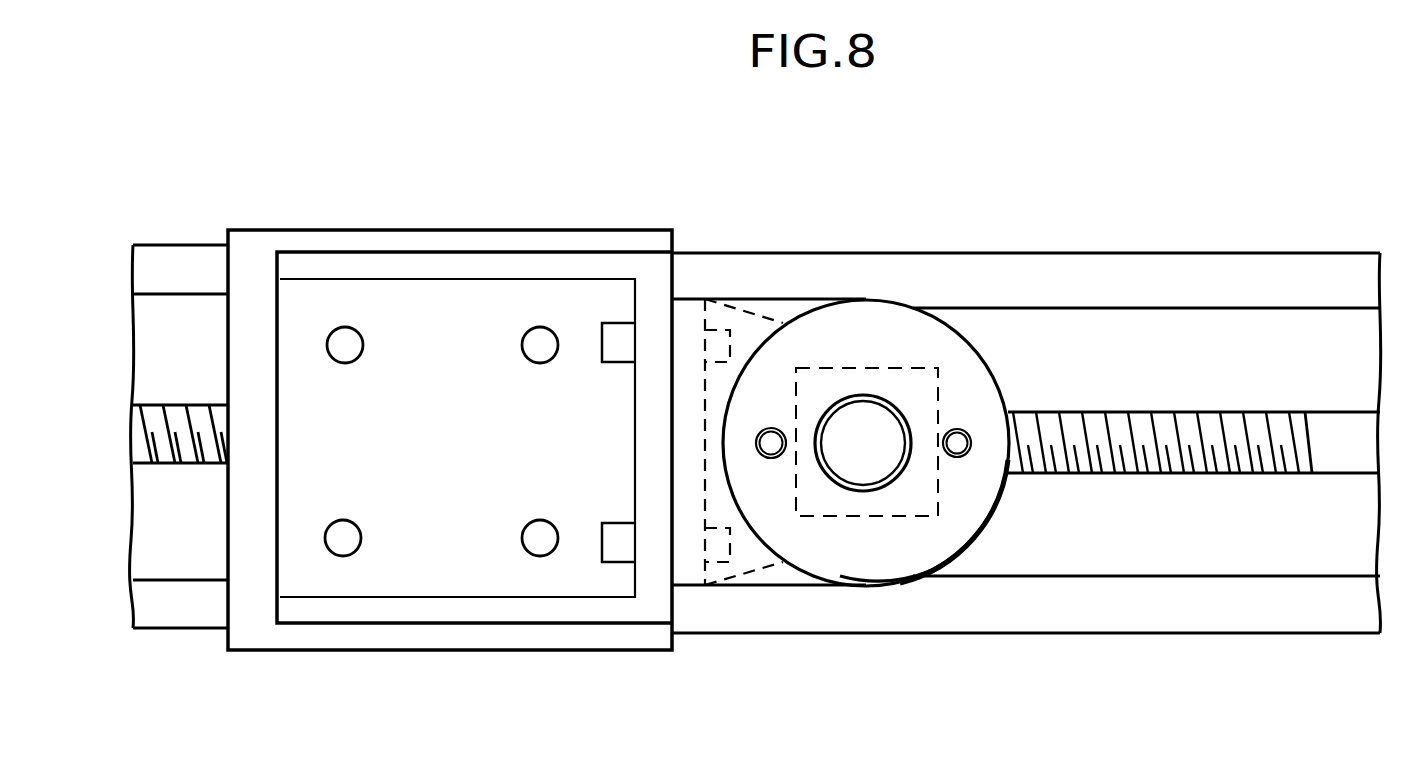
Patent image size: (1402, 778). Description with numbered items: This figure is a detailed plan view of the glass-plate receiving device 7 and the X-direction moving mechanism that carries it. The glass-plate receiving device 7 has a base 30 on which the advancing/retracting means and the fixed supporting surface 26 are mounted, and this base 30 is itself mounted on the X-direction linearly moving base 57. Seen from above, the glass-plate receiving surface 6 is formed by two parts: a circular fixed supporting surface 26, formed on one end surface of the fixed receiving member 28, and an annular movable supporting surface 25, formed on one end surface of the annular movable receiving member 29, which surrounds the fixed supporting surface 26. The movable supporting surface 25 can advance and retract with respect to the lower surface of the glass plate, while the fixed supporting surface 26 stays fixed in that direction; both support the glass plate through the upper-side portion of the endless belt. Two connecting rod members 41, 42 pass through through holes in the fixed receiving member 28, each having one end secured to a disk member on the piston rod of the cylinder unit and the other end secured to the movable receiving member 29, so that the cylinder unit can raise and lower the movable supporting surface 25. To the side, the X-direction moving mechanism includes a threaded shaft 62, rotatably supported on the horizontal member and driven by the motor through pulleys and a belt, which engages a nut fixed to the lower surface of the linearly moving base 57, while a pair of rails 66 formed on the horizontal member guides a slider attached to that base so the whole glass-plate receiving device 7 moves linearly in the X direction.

The glass-plate receiving surface 6 is at (878, 323).
The glass-plate receiving device 7 is at (791, 588).
The movable supporting surface 25 is at (907, 568).
The fixed supporting surface 26 is at (860, 472).
The fixed receiving member 28 is at (885, 425).
The movable receiving member 29 is at (967, 533).
The base 30 is at (552, 264).
The connecting rod member 41 is at (771, 428).
The connecting rod member 42 is at (962, 432).
The X-direction linearly moving base 57 is at (390, 238).
The threaded shaft 62 is at (1277, 477).
The rails 66 is at (1190, 283).